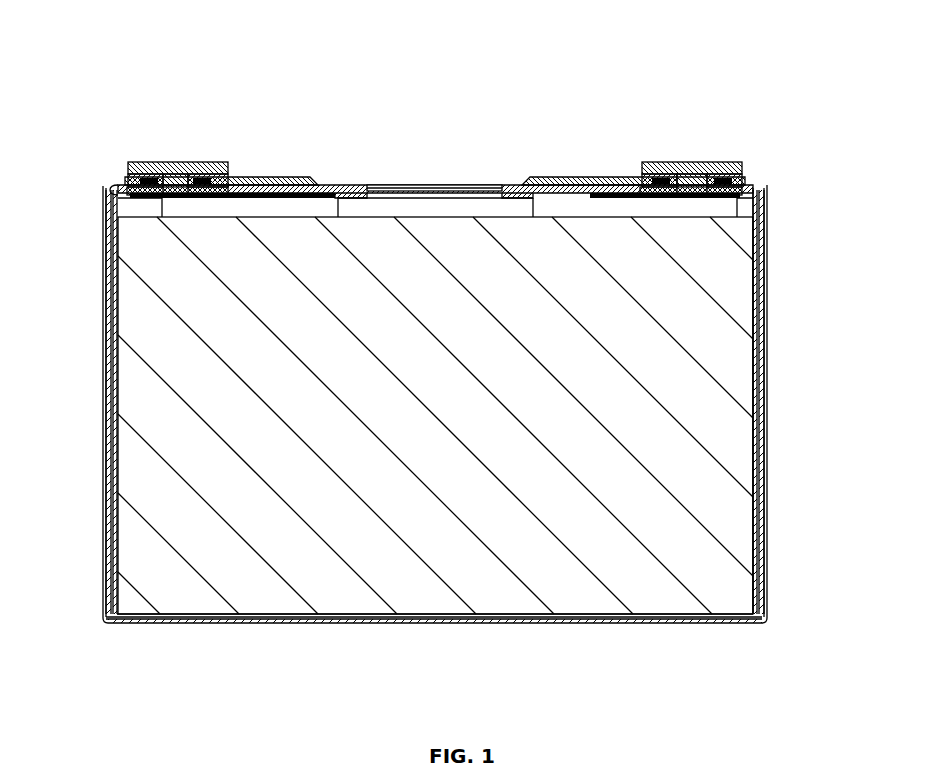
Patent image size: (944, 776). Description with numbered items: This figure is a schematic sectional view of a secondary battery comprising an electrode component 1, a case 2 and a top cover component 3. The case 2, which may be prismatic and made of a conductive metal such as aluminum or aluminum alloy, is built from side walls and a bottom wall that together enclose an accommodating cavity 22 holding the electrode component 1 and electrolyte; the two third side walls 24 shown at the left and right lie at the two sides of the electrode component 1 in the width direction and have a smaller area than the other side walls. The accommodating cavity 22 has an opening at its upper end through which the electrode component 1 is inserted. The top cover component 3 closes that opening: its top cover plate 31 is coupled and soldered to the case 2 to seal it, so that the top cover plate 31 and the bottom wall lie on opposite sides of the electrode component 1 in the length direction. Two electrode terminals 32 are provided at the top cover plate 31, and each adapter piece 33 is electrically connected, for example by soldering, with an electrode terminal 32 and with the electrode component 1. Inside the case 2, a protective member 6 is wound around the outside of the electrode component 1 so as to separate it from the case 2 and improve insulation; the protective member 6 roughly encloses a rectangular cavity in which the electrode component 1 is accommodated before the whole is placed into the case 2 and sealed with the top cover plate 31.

The electrode component 1 is at (441, 590).
The case 2 is at (461, 399).
The top cover component 3 is at (431, 131).
The protective member 6 is at (762, 392).
The accommodating cavity 22 is at (760, 268).
The third side wall 24 is at (765, 312).
The top cover plate 31 is at (345, 188).
The electrode terminal 32 is at (175, 163).
The adapter piece 33 is at (261, 178).